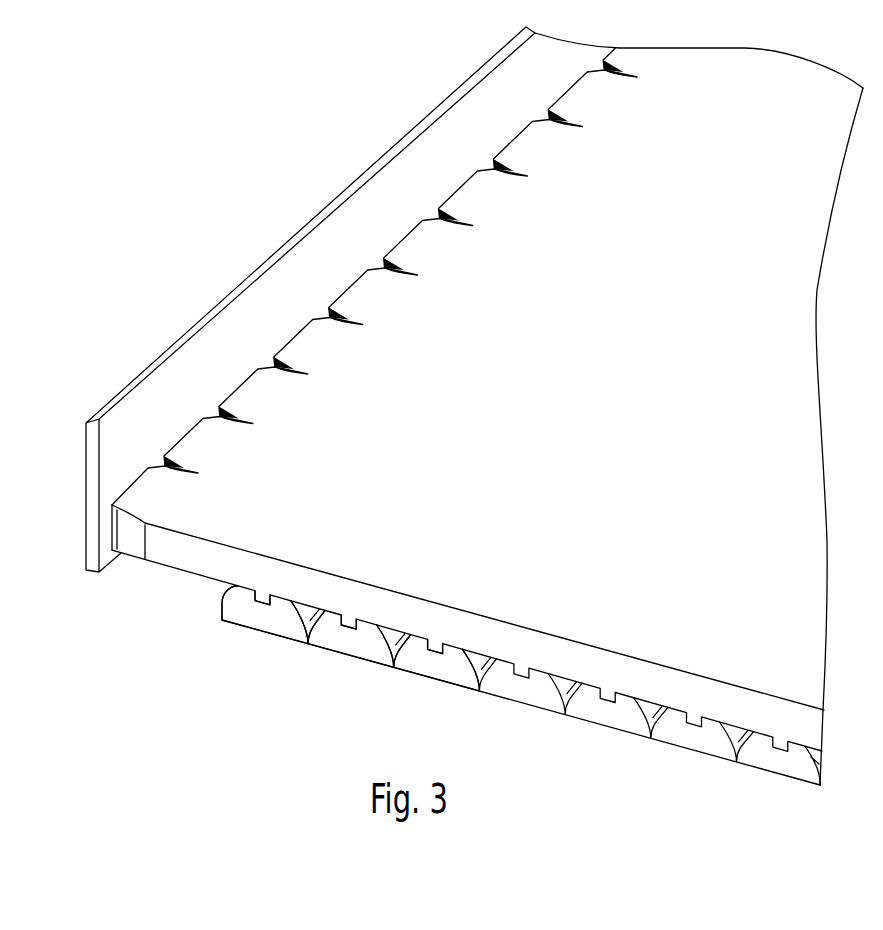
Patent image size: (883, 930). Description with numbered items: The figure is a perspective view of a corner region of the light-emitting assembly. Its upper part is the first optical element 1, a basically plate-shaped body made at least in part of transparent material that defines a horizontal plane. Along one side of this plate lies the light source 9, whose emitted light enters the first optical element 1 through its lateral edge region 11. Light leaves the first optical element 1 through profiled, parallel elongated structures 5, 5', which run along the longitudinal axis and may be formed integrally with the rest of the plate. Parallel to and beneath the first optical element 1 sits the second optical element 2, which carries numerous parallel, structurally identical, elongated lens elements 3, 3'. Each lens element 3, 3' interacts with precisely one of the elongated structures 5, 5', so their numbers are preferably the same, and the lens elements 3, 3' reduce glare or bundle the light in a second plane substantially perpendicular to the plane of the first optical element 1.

The first optical element 1 is at (487, 409).
The second optical element 2 is at (517, 685).
The lens element 3 is at (261, 629).
The lens element 3' is at (384, 674).
The elongated structure 5 is at (281, 564).
The elongated structure 5' is at (413, 600).
The light source 9 is at (190, 333).
The lateral edge region 11 is at (130, 548).